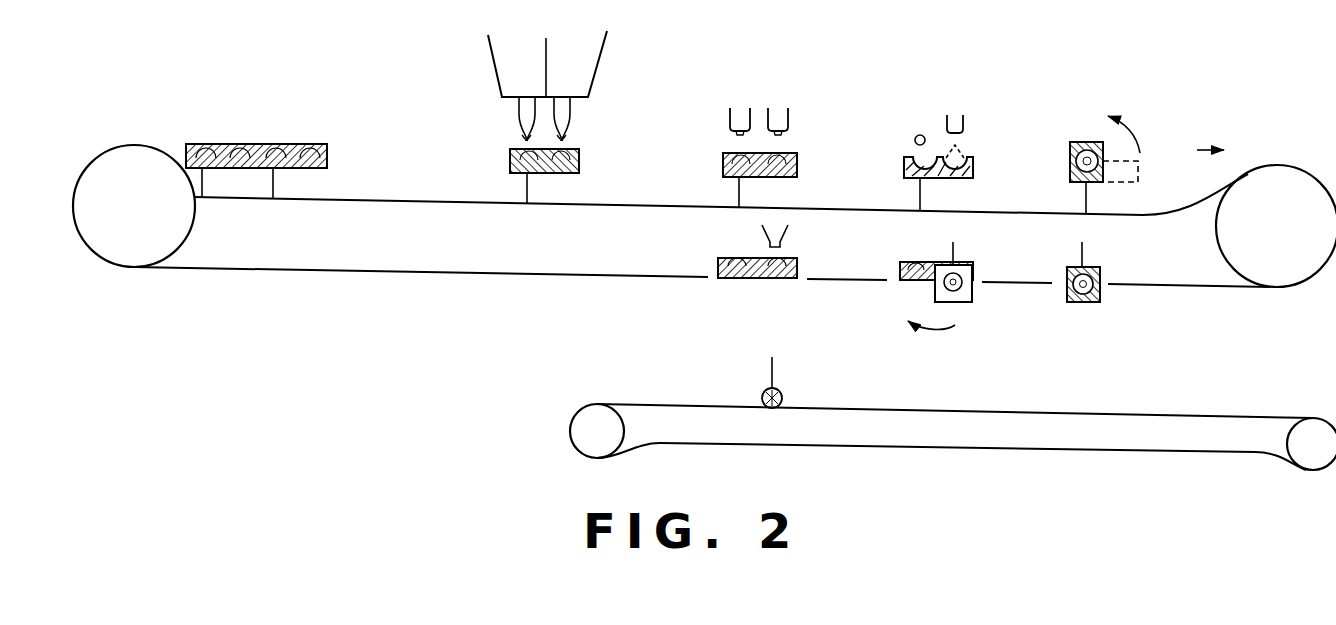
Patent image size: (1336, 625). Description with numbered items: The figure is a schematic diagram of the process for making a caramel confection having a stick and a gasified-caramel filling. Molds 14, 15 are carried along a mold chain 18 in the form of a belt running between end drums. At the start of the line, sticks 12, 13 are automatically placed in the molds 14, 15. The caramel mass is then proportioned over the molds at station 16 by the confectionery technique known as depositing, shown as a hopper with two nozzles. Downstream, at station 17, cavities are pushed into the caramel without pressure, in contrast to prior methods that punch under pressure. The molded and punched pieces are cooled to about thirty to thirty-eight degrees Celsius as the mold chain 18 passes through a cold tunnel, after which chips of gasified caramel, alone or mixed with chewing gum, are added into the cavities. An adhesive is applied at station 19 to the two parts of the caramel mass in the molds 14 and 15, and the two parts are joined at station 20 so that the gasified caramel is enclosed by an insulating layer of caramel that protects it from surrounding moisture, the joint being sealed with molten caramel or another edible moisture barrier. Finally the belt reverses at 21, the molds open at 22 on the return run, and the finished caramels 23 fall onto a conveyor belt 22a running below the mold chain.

The stick 12 is at (203, 183).
The stick 13 is at (273, 183).
The mold 14 is at (204, 132).
The mold 15 is at (300, 128).
The proportioning station 16 is at (510, 55).
The cavity punching station 17 is at (760, 84).
The mold chain 18 is at (839, 207).
The adhesive application station 19 is at (942, 100).
The joining station 20 is at (1079, 124).
The belt reversal 21 is at (1192, 288).
The mold opening station 22 is at (985, 299).
The conveyor belt 22a is at (900, 410).
The caramel 23 is at (800, 374).